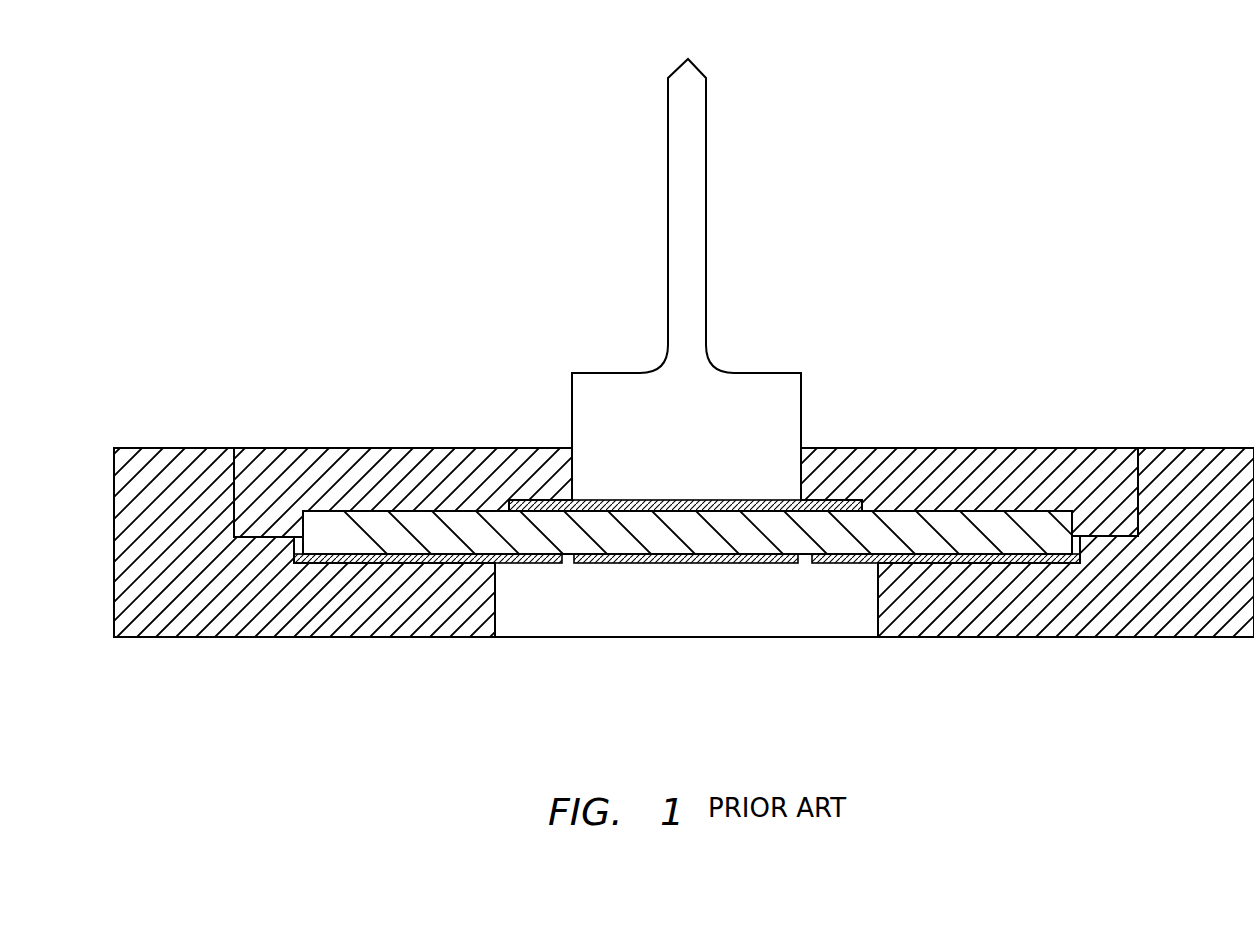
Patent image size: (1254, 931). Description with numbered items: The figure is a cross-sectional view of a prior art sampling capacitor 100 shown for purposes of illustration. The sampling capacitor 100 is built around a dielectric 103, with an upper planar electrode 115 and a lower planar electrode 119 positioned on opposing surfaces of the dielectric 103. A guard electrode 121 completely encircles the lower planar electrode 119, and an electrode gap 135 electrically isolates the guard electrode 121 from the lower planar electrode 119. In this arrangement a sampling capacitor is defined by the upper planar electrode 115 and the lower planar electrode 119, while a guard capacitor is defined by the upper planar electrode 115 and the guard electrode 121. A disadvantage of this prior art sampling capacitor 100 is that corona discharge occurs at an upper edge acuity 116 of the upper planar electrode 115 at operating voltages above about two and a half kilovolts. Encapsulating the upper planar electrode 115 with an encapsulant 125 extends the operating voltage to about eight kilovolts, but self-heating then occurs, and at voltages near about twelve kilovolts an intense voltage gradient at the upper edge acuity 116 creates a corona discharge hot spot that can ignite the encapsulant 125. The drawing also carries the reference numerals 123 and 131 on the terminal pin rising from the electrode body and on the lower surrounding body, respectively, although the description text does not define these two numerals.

The sampling capacitor 100 is at (955, 51).
The dielectric 103 is at (383, 530).
The upper planar electrode 115 is at (525, 500).
The upper edge acuity 116 is at (870, 510).
The lower planar electrode 119 is at (673, 563).
The guard electrode 121 is at (530, 563).
The terminal pin 123 is at (707, 79).
The encapsulant 125 is at (1053, 483).
The lower housing portion 131 is at (1085, 618).
The electrode gap 135 is at (800, 563).